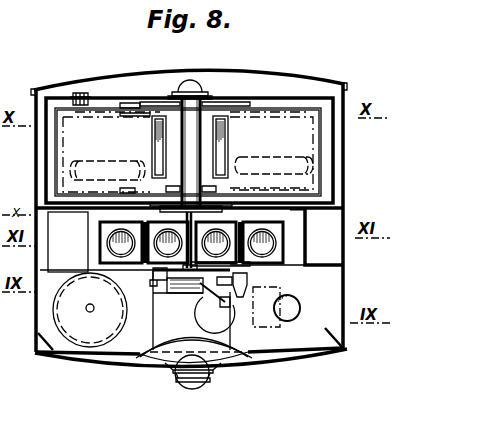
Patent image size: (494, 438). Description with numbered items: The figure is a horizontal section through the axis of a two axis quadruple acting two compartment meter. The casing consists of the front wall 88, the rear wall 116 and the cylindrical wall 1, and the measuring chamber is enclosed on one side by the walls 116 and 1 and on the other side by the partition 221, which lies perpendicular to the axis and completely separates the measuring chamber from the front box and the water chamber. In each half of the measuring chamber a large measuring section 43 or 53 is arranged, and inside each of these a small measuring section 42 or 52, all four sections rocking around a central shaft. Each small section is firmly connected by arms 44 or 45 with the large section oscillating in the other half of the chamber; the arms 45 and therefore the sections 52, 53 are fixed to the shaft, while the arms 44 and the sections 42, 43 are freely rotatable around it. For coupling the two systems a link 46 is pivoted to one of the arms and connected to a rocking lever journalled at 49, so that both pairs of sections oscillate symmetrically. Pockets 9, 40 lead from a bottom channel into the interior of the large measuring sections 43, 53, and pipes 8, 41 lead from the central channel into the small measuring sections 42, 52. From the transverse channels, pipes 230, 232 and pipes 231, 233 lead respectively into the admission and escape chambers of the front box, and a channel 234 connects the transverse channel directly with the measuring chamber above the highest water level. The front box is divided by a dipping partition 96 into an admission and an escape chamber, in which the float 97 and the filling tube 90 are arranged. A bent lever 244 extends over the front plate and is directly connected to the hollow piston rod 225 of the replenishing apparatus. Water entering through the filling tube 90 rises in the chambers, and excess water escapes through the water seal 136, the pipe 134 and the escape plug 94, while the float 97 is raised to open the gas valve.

The cylindrical wall 1 is at (343, 190).
The pipe 8 is at (263, 157).
The pocket 9 is at (220, 147).
The pocket 40 is at (166, 146).
The pipe 41 is at (96, 162).
The small measuring section 42 is at (271, 153).
The large measuring section 43 is at (45, 130).
The arm 44 is at (248, 113).
The arm 45 is at (130, 103).
The link 46 is at (195, 146).
The journal of rocking lever 49 is at (80, 92).
The small measuring section 52 is at (111, 152).
The large measuring section 53 is at (322, 138).
The front wall 88 is at (116, 366).
The filling tube 90 is at (298, 310).
The escape plug 94 is at (182, 386).
The dipping partition 96 is at (152, 325).
The float 97 is at (90, 300).
The rear wall 116 is at (204, 70).
The pipe 134 is at (222, 368).
The water seal 136 is at (286, 304).
The partition 221 is at (75, 213).
The piston rod 225 is at (222, 318).
The pipe 230 is at (166, 242).
The pipe 231 is at (121, 242).
The pipe 232 is at (211, 240).
The pipe 233 is at (261, 242).
The channel 234 is at (316, 237).
The bent lever 244 is at (204, 300).